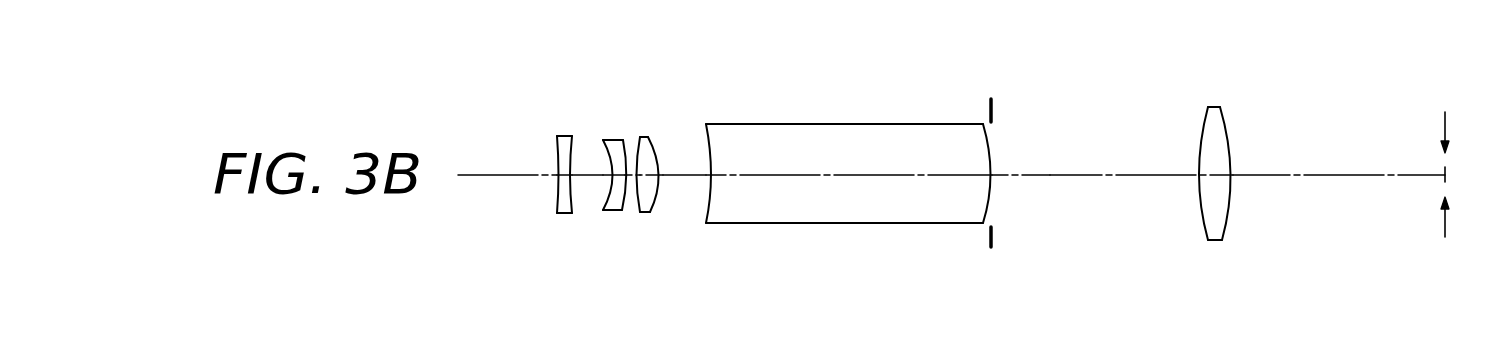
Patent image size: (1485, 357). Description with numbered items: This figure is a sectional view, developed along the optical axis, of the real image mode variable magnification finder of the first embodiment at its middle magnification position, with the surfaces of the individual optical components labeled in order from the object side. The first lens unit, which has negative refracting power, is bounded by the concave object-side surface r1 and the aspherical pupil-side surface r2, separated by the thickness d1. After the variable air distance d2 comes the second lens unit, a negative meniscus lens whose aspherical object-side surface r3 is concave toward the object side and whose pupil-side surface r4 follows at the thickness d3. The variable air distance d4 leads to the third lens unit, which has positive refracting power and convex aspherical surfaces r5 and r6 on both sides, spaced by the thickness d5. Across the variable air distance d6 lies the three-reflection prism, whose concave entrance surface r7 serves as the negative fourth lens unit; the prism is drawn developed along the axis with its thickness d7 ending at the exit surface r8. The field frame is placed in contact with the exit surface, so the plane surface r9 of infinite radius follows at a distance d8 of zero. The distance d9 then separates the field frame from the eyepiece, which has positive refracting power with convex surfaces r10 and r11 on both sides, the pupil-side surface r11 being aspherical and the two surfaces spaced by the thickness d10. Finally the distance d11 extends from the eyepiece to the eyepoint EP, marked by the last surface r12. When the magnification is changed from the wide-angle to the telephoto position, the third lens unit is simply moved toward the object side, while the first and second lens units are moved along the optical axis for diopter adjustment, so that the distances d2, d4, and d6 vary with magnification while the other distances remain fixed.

The object-side surface of the first lens unit r1 is at (556, 152).
The pupil-side surface of the first lens unit r2 is at (573, 137).
The object-side surface of the second lens unit r3 is at (604, 141).
The pupil-side surface of the second lens unit r4 is at (625, 140).
The object-side surface of the third lens unit r5 is at (641, 137).
The pupil-side surface of the third lens unit r6 is at (650, 140).
The entrance surface of the prism r7 is at (707, 124).
The exit surface of the prism r8 is at (984, 126).
The field frame surface r9 is at (991, 100).
The object-side surface of the eyepiece r10 is at (1200, 130).
The pupil-side surface of the eyepiece r11 is at (1230, 130).
The eyepoint surface r12 is at (1442, 133).
The thickness of the first lens unit d1 is at (563, 216).
The distance between the first and second lens units d2 is at (593, 178).
The thickness of the second lens unit d3 is at (614, 178).
The distance between the second and third lens units d4 is at (647, 178).
The thickness of the third lens unit d5 is at (653, 214).
The distance between the third lens unit and the prism d6 is at (690, 178).
The thickness of the prism d7 is at (823, 178).
The distance between the prism exit surface and the field frame d8 is at (989, 178).
The distance between the field frame and the eyepiece d9 is at (1103, 178).
The thickness of the eyepiece d10 is at (1213, 180).
The distance between the eyepiece and the eyepoint d11 is at (1320, 178).
The eyepoint EP is at (1446, 235).